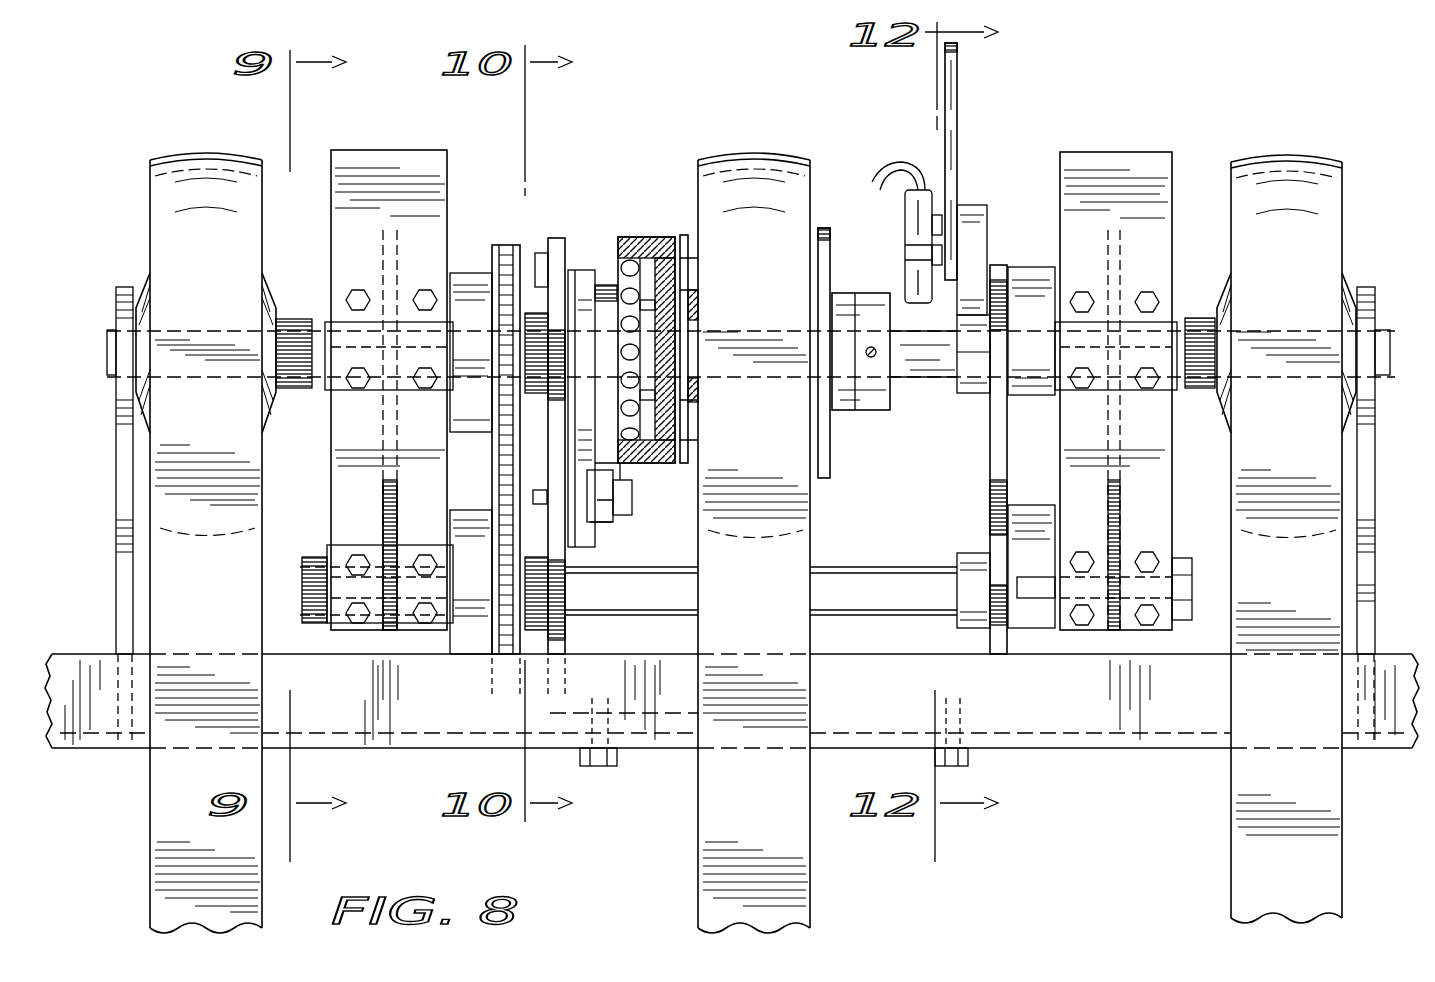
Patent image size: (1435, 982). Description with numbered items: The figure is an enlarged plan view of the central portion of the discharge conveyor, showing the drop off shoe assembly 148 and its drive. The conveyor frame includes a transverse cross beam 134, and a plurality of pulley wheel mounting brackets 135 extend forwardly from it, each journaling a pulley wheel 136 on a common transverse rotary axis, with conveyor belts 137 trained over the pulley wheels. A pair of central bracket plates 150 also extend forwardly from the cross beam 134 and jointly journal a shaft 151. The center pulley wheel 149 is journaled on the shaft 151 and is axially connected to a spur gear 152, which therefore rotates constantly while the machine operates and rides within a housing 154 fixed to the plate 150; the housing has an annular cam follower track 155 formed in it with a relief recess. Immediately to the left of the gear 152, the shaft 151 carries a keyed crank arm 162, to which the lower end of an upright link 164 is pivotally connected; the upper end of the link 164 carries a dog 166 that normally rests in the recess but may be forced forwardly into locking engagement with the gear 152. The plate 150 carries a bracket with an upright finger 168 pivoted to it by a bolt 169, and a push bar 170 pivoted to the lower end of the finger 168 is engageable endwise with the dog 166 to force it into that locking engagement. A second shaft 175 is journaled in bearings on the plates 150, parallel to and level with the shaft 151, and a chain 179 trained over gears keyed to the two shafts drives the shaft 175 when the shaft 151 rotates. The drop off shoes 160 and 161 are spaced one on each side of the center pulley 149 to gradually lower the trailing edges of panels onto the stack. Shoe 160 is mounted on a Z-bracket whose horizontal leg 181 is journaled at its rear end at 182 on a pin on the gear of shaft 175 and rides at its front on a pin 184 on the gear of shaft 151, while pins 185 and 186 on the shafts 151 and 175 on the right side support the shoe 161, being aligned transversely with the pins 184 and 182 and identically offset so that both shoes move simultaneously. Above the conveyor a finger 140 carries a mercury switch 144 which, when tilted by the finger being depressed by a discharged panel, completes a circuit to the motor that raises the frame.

The cross beam 134 is at (1197, 750).
The pulley wheel mounting brackets 135 is at (1376, 447).
The pulley wheel 136 is at (1346, 280).
The conveyor belts 137 is at (165, 873).
The finger 140 is at (958, 105).
The mercury switch 144 is at (905, 205).
The drop off shoe assembly 148 is at (1198, 154).
The center pulley wheel 149 is at (823, 230).
The central bracket plates 150 is at (1003, 466).
The shaft 151 is at (778, 328).
The spur gear 152 is at (637, 238).
The housing 154 is at (666, 240).
The annular cam follower track 155 is at (693, 262).
The drop off shoe 160 is at (447, 170).
The drop off shoe 161 is at (1115, 148).
The crank arm 162 is at (606, 290).
The upright link 164 is at (578, 430).
The dog 166 is at (692, 427).
The upright finger 168 is at (605, 525).
The bolt 169 is at (626, 505).
The push bar 170 is at (622, 470).
The shaft 175 is at (835, 580).
The chain 179 is at (496, 657).
The horizontal leg 181 is at (343, 493).
The journal 182 is at (353, 618).
The pin 184 is at (343, 404).
The pin 185 is at (1135, 386).
The pin 186 is at (1162, 575).